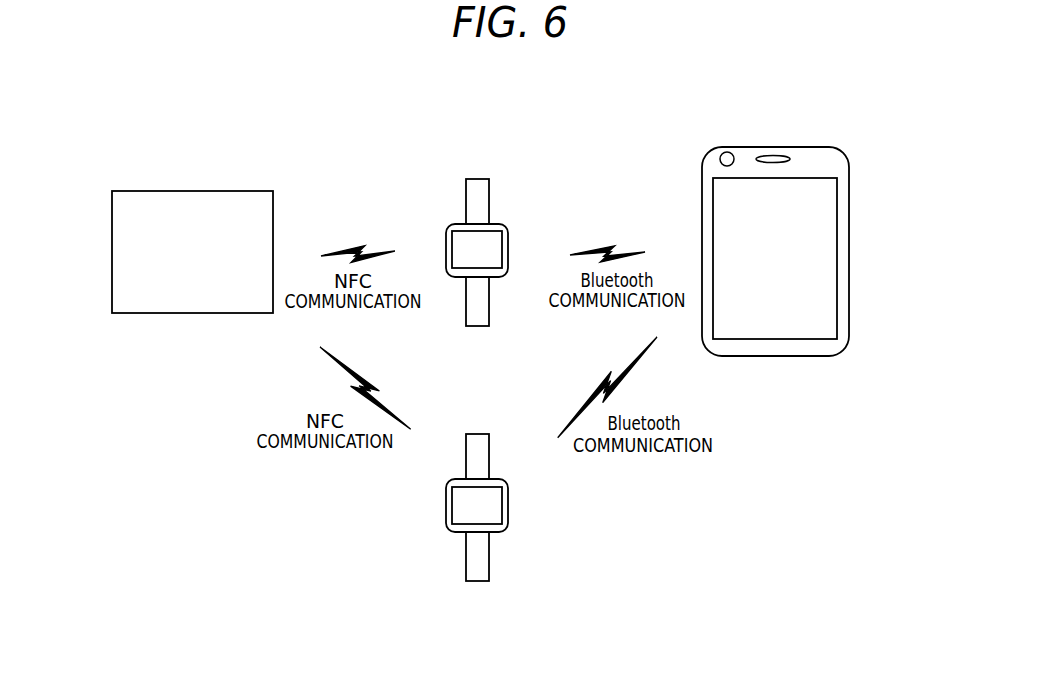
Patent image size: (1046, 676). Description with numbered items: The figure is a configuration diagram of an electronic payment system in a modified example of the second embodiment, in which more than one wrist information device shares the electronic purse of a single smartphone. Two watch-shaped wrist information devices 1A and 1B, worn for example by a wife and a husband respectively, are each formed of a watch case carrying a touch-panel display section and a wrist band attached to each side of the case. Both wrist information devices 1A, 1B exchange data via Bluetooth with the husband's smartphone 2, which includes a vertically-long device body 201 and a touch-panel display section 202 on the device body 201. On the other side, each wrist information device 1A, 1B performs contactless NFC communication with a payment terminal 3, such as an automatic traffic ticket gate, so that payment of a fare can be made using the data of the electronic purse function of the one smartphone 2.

The payment terminal 3 is at (193, 174).
The wrist information device 1A is at (488, 227).
The wrist information device 1B is at (487, 545).
The smartphone 2 is at (805, 220).
The device body 201 is at (849, 202).
The display section 202 is at (834, 320).